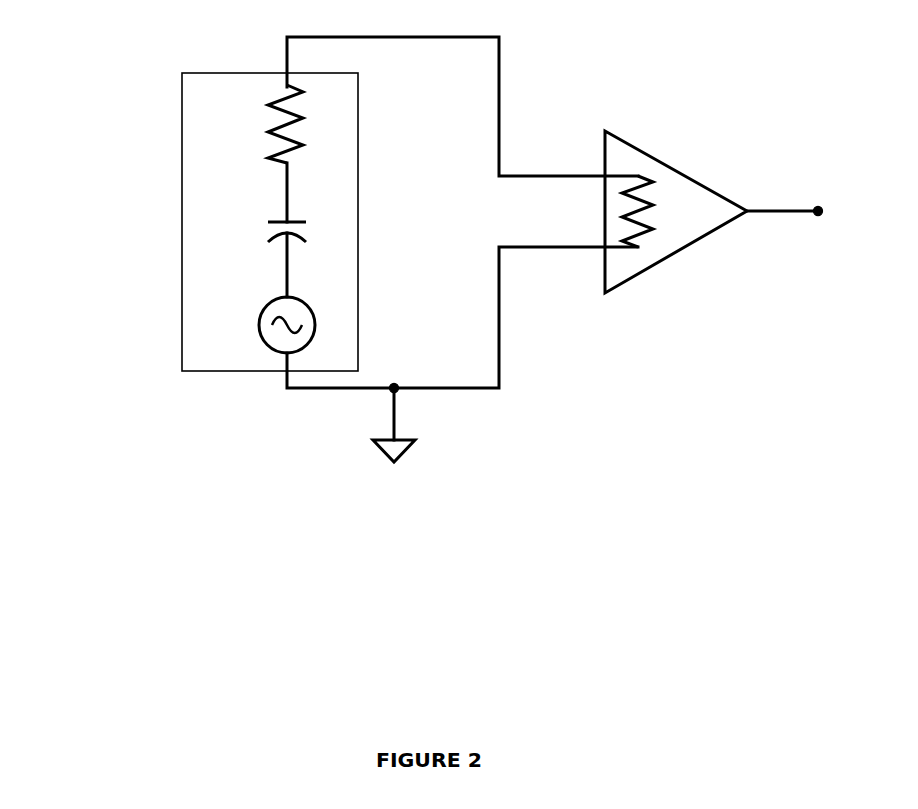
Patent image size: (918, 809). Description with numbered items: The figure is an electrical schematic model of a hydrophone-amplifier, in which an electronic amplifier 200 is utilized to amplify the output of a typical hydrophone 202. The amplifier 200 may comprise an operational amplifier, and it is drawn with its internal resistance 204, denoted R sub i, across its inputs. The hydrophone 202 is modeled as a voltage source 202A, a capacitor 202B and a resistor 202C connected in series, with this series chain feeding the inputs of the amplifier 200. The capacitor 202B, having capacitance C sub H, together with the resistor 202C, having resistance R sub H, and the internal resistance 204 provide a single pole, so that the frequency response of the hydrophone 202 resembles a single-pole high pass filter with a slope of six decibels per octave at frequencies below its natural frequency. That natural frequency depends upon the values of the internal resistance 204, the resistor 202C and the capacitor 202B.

The electronic amplifier 200 is at (623, 140).
The hydrophone 202 is at (252, 372).
The voltage source 202A is at (286, 294).
The capacitor 202B is at (286, 205).
The resistor 202C is at (286, 86).
The internal resistance 204 is at (641, 233).